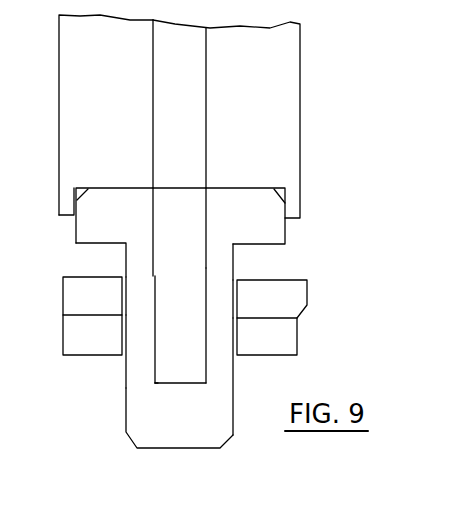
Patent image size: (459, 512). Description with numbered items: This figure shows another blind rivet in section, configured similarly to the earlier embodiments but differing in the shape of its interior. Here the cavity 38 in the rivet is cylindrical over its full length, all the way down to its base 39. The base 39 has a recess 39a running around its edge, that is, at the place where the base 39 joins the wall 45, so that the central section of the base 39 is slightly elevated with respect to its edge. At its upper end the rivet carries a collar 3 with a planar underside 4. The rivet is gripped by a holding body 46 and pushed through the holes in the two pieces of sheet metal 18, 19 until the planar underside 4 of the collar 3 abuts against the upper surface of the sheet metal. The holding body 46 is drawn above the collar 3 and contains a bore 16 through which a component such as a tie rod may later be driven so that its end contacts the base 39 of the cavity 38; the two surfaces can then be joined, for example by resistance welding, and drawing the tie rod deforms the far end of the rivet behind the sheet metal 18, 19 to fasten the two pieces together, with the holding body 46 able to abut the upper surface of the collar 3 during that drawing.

The bore 16 is at (185, 66).
The holding body 46 is at (265, 132).
The collar 3 is at (253, 222).
The planar underside 4 is at (98, 247).
The cavity 38 is at (198, 275).
The sheet metal 18 is at (282, 300).
The sheet metal 19 is at (272, 338).
The wall 45 is at (155, 362).
The base 39 is at (180, 382).
The recess 39a is at (153, 383).